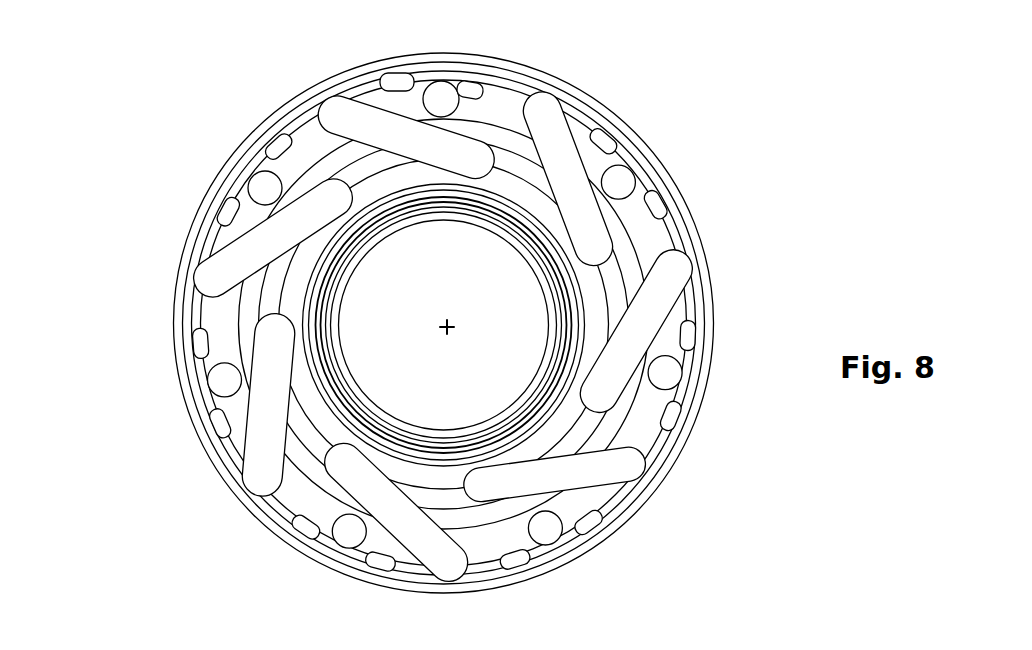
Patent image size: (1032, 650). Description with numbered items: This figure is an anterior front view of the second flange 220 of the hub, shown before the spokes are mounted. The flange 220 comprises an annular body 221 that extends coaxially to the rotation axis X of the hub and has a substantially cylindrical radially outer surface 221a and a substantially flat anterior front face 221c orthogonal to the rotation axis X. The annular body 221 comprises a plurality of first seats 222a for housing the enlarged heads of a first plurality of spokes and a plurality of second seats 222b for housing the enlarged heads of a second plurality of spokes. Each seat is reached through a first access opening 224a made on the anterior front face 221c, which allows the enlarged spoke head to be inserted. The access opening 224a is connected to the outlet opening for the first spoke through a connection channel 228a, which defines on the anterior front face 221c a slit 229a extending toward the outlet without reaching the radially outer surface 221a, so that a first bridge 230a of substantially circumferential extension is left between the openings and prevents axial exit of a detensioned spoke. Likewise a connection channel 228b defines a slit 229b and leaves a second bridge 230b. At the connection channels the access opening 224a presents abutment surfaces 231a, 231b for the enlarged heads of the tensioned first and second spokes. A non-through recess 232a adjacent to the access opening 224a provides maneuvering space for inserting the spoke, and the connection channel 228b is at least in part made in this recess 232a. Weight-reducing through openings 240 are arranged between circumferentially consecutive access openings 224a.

The flange 220 is at (190, 133).
The annular body 221 is at (193, 233).
The radially outer surface 221a is at (657, 140).
The anterior front face 221c is at (583, 420).
The first seat 222a is at (213, 425).
The second seat 222b is at (190, 327).
The first access opening 224a is at (438, 93).
The connection channel 228a is at (372, 556).
The connection channel 228b is at (300, 525).
The slit 229a is at (593, 527).
The slit 229b is at (510, 560).
The first bridge 230a is at (368, 66).
The second bridge 230b is at (673, 443).
The abutment surface 231a is at (412, 90).
The abutment surface 231b is at (478, 95).
The non-through recess 232a is at (508, 100).
The weight-reducing through opening 240 is at (650, 283).
The rotation axis X is at (447, 325).